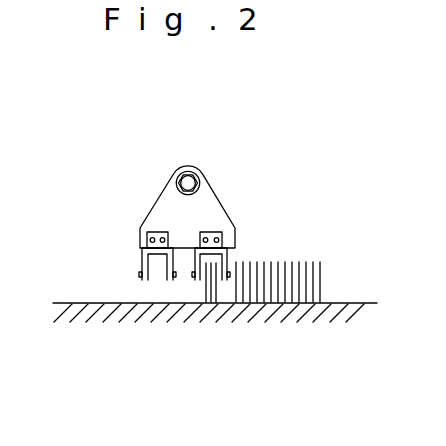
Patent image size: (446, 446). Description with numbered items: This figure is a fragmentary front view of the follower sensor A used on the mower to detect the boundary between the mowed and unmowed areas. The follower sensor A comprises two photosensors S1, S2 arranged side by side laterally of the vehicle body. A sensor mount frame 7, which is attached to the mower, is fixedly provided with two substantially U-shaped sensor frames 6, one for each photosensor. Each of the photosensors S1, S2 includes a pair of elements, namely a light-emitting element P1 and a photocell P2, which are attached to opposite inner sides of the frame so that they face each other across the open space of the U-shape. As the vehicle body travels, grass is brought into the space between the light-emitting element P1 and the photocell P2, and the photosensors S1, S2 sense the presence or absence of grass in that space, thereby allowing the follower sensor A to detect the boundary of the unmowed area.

The follower sensor A is at (113, 201).
The sensor frame 6 is at (170, 248).
The sensor mount frame 7 is at (197, 174).
The photosensor S1 is at (136, 265).
The photosensor S2 is at (238, 257).
The light-emitting element P1 is at (195, 282).
The photocell P2 is at (300, 393).